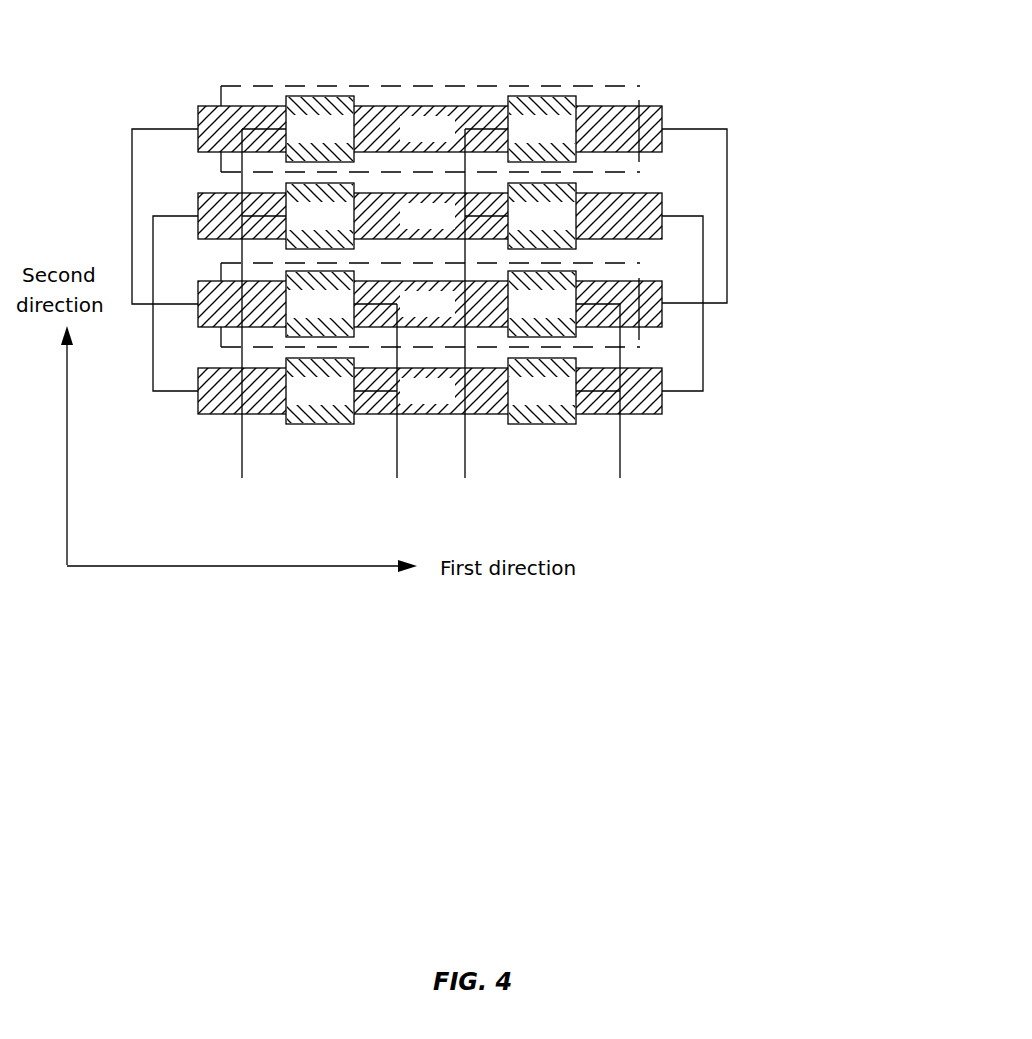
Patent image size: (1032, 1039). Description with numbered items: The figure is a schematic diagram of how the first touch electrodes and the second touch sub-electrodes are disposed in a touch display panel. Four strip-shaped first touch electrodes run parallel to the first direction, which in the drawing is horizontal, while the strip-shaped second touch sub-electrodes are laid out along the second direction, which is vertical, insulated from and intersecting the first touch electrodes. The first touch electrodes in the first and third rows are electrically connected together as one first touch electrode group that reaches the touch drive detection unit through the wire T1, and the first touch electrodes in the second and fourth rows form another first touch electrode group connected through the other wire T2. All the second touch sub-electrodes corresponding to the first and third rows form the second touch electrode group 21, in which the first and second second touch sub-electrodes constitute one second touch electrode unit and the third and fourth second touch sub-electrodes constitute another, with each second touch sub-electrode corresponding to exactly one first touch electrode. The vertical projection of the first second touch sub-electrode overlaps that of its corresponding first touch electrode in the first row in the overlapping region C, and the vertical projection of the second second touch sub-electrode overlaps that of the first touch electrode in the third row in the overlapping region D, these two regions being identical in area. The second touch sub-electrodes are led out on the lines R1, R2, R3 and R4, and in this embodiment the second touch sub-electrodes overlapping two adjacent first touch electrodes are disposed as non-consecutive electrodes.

The second touch electrode group 21 is at (639, 320).
The overlapping region C is at (332, 86).
The overlapping region D is at (517, 263).
The wire T1 is at (727, 215).
The wire T2 is at (703, 347).
The first sensing line R1 is at (259, 320).
The second sensing line R2 is at (382, 407).
The third sensing line R3 is at (480, 320).
The fourth sensing line R4 is at (604, 407).